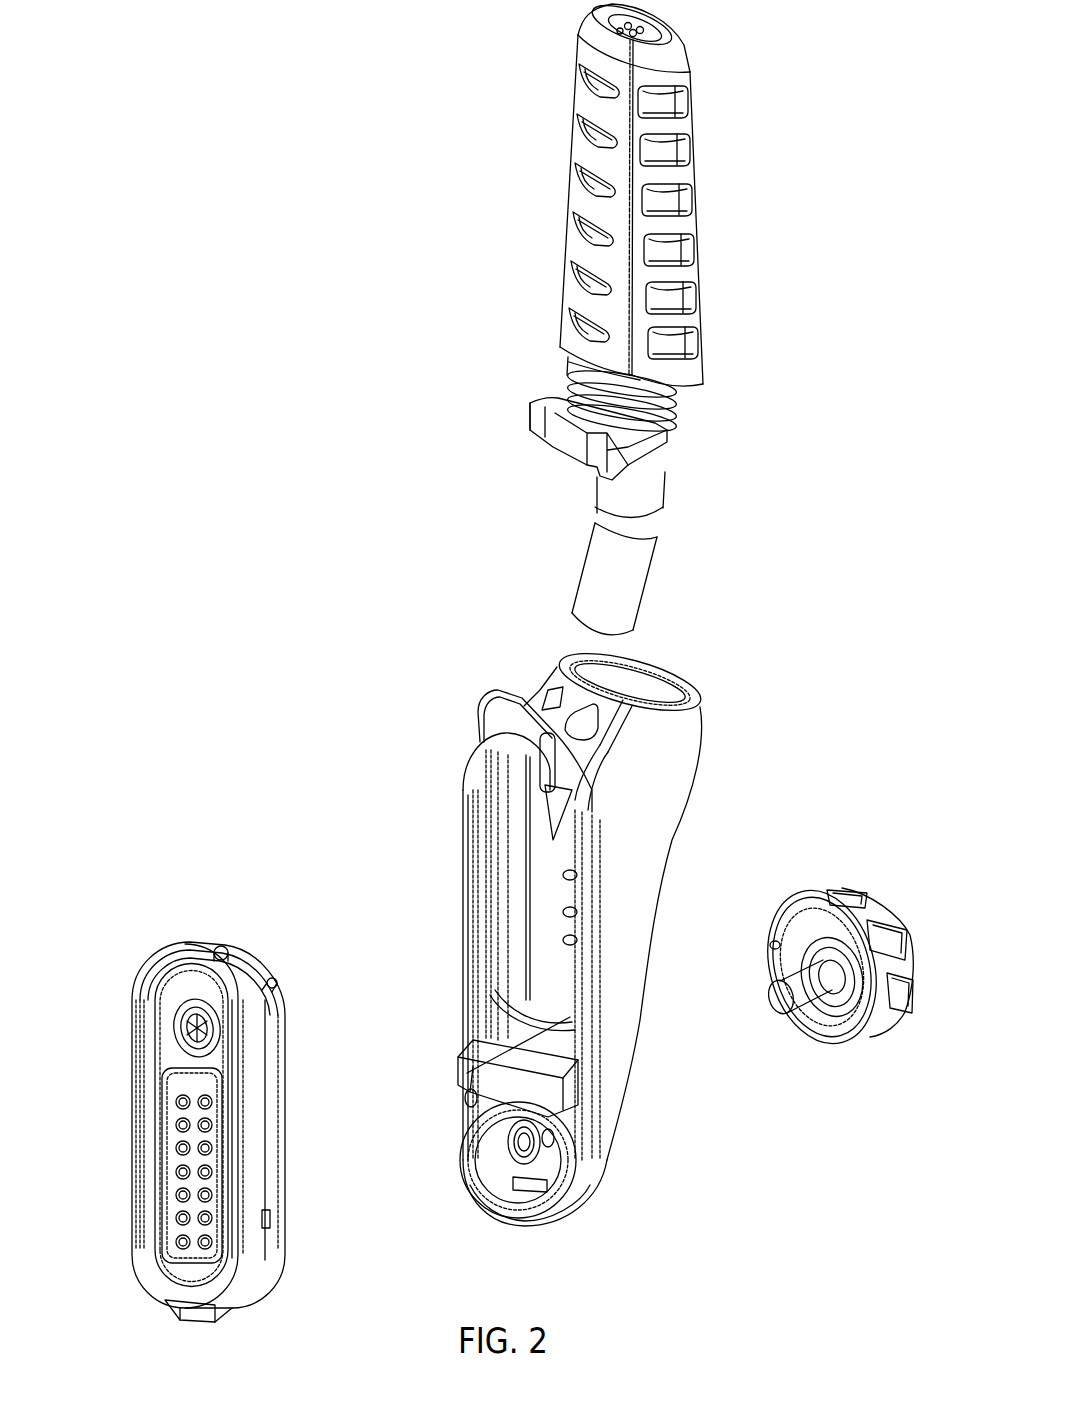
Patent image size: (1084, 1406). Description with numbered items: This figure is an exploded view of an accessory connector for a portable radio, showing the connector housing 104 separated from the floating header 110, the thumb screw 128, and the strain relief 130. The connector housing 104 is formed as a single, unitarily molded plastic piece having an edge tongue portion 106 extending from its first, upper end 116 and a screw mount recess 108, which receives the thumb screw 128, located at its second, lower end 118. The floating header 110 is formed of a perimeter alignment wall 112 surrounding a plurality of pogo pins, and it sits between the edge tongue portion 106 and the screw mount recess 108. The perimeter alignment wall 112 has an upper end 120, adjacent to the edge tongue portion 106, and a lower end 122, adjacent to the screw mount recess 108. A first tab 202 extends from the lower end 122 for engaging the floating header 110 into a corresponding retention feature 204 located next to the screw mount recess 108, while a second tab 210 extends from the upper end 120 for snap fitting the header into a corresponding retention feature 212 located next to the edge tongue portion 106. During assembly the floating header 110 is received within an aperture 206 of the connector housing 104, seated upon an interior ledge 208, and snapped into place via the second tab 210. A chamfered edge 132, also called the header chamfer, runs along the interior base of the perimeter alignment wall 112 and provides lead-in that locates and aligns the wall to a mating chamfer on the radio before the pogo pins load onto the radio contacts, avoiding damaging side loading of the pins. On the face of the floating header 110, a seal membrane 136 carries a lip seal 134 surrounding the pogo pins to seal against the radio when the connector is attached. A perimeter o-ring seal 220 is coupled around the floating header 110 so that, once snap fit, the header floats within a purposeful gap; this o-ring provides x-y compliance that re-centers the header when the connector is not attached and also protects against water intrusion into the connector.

The connector housing 104 is at (555, 960).
The edge tongue portion 106 is at (493, 702).
The screw mount recess 108 is at (490, 1155).
The floating header 110 is at (199, 1123).
The perimeter alignment wall 112 is at (235, 1000).
The first, upper end 116 is at (540, 698).
The second, lower end 118 is at (525, 1222).
The upper end 120 is at (188, 947).
The lower end 122 is at (170, 1305).
The thumb screw 128 is at (890, 1020).
The strain relief 130 is at (701, 262).
The chamfered edge 132 is at (150, 1163).
The lip seal 134 is at (225, 1095).
The seal membrane 136 is at (175, 1053).
The first tab 202 is at (185, 1322).
The retention feature 204 is at (460, 1058).
The aperture 206 is at (540, 925).
The interior ledge 208 is at (487, 963).
The second tab 210 is at (222, 948).
The retention feature 212 is at (525, 757).
The perimeter o-ring seal 220 is at (275, 978).